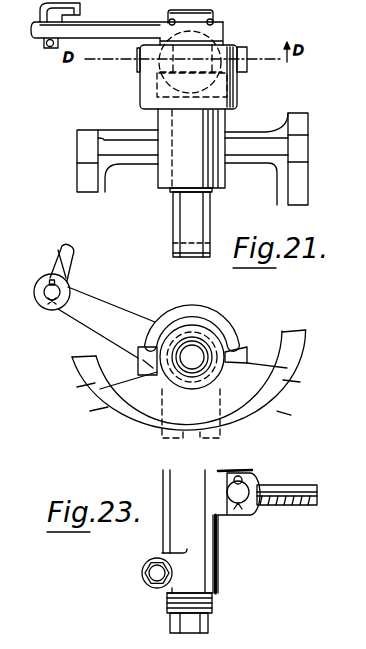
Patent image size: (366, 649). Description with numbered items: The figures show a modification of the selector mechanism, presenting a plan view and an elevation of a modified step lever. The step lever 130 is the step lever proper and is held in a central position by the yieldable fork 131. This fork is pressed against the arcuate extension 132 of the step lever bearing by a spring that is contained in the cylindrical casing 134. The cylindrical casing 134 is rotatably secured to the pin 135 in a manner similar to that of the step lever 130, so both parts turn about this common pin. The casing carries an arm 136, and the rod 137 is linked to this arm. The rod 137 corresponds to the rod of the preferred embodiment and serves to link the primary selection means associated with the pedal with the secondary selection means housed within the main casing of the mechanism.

In FIG. 21, the step lever 130 is at (277, 188).
In FIG. 23, the step lever 130 is at (307, 393).
In FIG. 21, the yieldable fork 131 is at (241, 46).
In FIG. 23, the yieldable fork 131 is at (248, 346).
In FIG. 21, the arcuate extension 132 is at (243, 88).
In FIG. 23, the arcuate extension 132 is at (212, 317).
In FIG. 23, the cylindrical casing 134 is at (221, 556).
In FIG. 21, the pin 135 is at (172, 218).
In FIG. 23, the arm 136 is at (257, 511).
In FIG. 23, the rod 137 is at (287, 485).